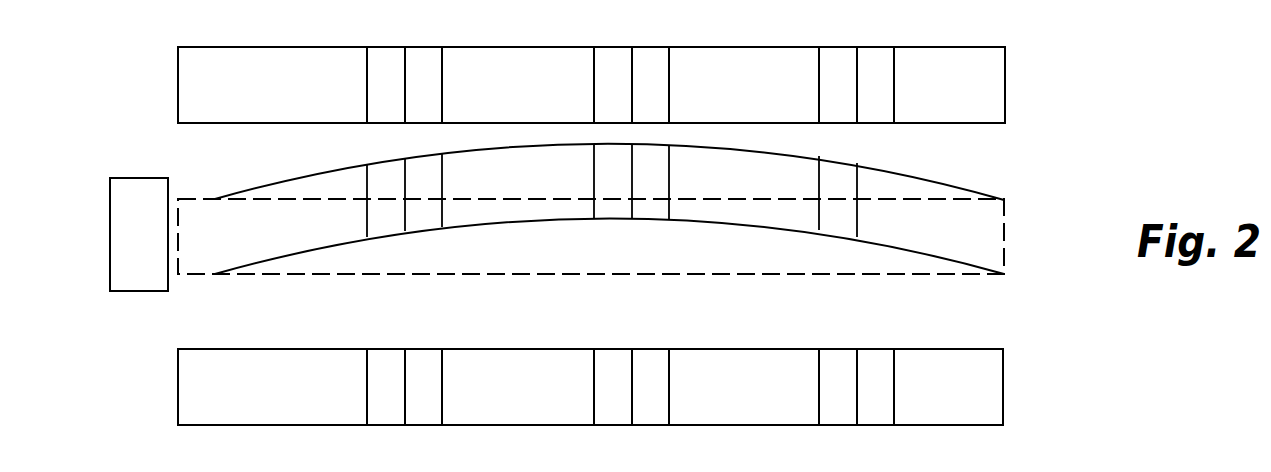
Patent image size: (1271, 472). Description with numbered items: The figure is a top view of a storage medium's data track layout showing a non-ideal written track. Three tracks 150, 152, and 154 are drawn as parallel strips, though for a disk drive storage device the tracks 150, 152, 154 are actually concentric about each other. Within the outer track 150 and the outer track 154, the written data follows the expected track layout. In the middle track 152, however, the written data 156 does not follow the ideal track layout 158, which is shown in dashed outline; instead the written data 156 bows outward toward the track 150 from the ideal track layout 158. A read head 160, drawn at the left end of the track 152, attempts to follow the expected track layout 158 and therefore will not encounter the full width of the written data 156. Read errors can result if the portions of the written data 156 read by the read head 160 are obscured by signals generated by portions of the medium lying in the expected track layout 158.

The track 150 is at (1005, 92).
The track 152 is at (1004, 237).
The track 154 is at (1003, 388).
The written data 156 is at (917, 175).
The ideal track layout 158 is at (775, 274).
The read head 160 is at (140, 291).